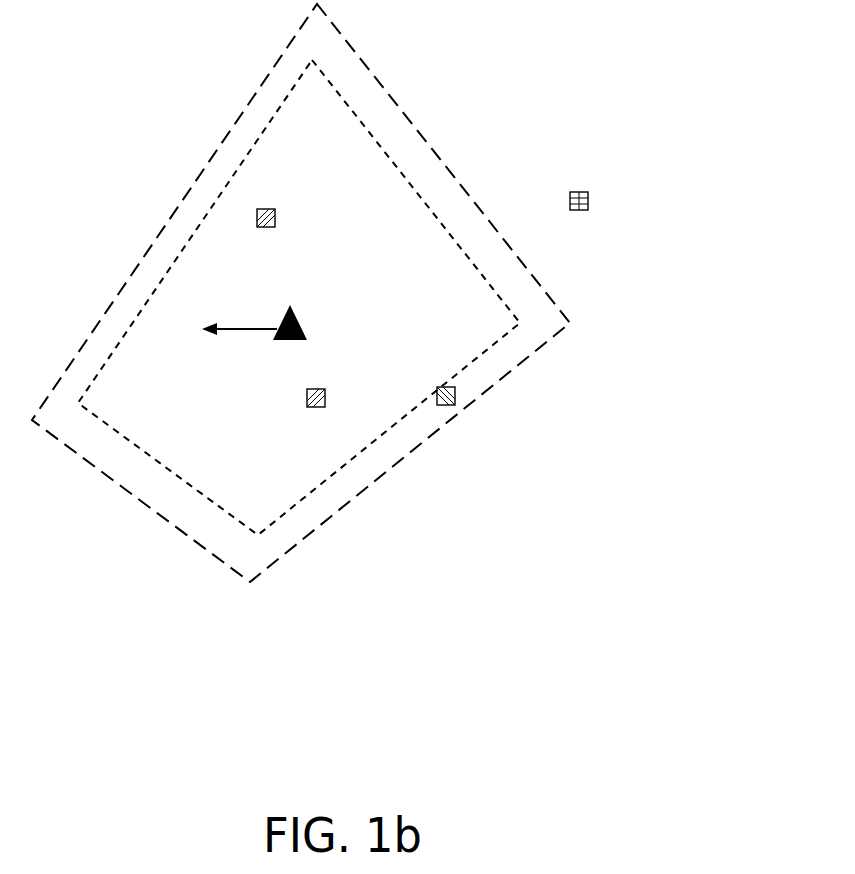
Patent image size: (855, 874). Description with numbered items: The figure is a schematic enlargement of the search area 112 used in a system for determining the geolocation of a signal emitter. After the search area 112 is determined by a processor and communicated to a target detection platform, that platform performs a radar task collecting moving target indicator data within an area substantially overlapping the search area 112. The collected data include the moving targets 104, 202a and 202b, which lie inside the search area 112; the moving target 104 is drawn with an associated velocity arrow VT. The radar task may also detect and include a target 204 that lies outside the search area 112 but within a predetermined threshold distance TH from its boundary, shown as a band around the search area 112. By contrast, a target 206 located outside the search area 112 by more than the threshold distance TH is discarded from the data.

The search area 112 is at (364, 127).
The moving target 104 is at (297, 317).
The moving target 202a is at (276, 208).
The moving target 202b is at (324, 388).
The target 204 is at (453, 405).
The target 206 is at (588, 191).
The threshold distance TH is at (317, 453).
The target velocity VT is at (239, 314).